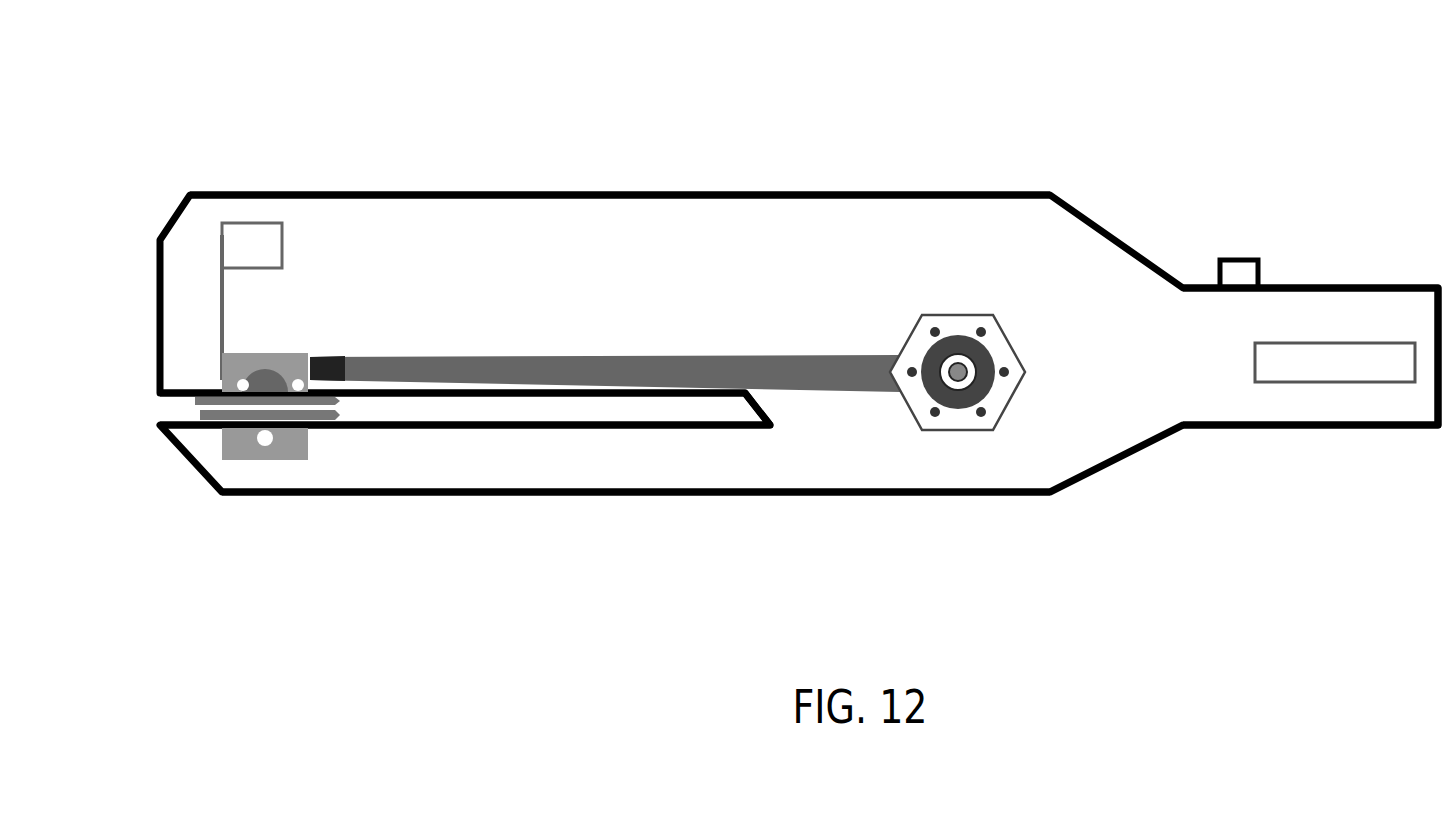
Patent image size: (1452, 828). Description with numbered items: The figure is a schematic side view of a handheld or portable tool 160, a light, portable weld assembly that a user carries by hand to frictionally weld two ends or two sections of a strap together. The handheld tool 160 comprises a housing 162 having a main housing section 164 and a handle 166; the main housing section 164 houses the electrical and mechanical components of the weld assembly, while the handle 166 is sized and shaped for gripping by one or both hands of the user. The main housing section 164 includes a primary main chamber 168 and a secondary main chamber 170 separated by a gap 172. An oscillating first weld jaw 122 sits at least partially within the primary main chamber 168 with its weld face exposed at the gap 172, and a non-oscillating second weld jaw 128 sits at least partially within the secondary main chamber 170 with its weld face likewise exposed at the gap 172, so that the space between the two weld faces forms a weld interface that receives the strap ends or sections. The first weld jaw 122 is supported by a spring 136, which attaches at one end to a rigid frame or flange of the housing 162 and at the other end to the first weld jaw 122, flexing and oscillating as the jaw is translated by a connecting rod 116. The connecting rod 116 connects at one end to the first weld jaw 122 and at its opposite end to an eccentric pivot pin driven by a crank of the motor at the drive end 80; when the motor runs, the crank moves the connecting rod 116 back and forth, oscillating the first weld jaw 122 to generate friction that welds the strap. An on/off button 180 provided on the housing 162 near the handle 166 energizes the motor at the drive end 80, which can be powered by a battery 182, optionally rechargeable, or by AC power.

The handheld tool 160 is at (748, 322).
The housing 162 is at (683, 188).
The main housing section 164 is at (350, 193).
The handle 166 is at (1360, 288).
The primary main chamber 168 is at (452, 255).
The secondary main chamber 170 is at (488, 460).
The gap 172 is at (582, 407).
The on/off button 180 is at (1240, 275).
The battery 182 is at (1315, 365).
The drive end 80 is at (980, 306).
The connecting rod 116 is at (590, 358).
The spring 136 is at (218, 295).
The first weld jaw 122 is at (197, 401).
The second weld jaw 128 is at (200, 415).